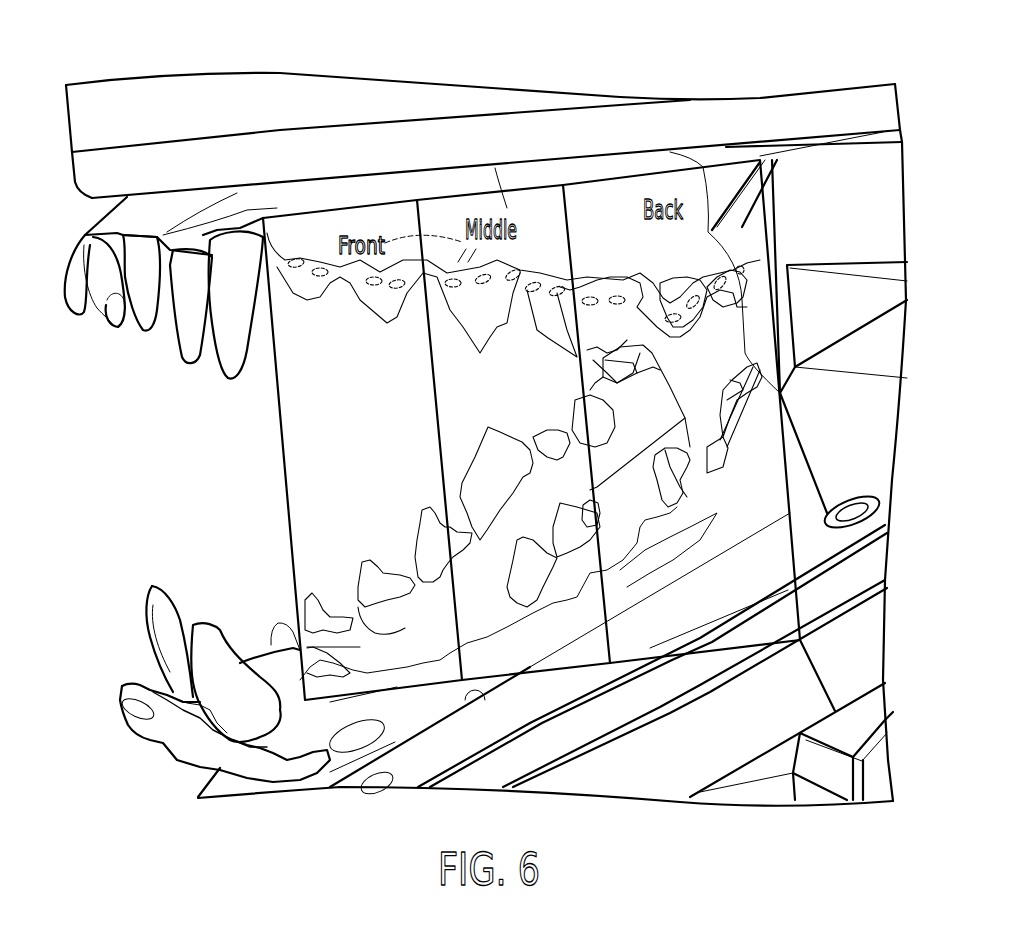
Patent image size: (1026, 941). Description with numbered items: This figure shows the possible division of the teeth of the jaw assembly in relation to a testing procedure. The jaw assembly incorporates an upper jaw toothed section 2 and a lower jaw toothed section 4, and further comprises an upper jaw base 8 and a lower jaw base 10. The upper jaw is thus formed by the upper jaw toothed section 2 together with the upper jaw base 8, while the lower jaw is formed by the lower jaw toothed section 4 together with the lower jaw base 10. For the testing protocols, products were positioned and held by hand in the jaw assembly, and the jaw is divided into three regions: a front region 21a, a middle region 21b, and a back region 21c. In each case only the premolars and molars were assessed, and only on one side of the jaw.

The upper jaw base 8 is at (139, 64).
The upper jaw toothed section 2 is at (71, 154).
The lower jaw toothed section 4 is at (532, 778).
The lower jaw base 10 is at (644, 791).
The front region 21a is at (362, 450).
The middle region 21b is at (513, 432).
The back region 21c is at (681, 411).